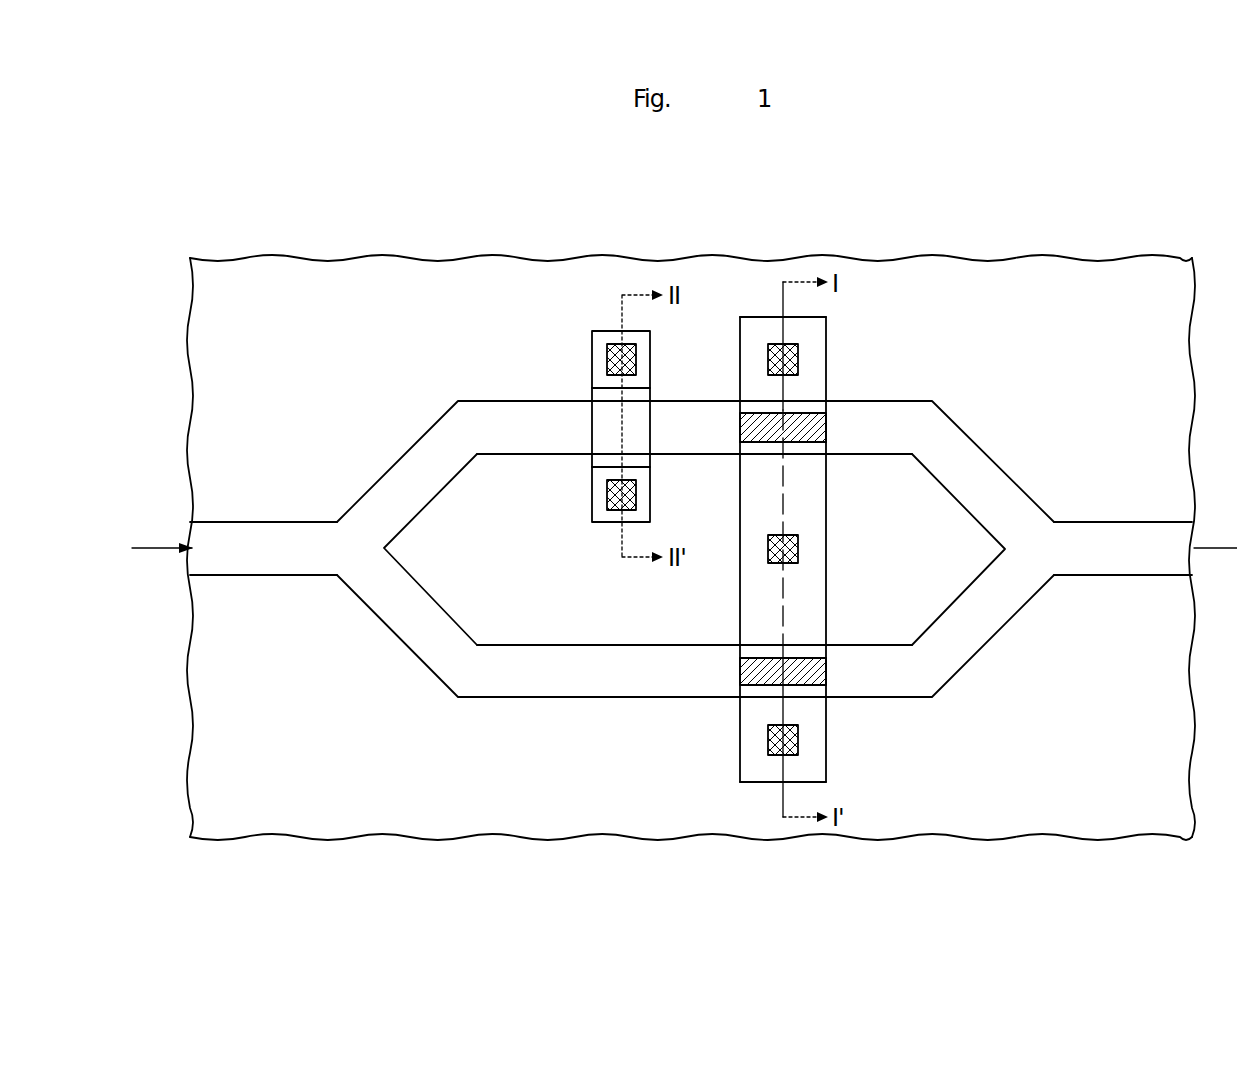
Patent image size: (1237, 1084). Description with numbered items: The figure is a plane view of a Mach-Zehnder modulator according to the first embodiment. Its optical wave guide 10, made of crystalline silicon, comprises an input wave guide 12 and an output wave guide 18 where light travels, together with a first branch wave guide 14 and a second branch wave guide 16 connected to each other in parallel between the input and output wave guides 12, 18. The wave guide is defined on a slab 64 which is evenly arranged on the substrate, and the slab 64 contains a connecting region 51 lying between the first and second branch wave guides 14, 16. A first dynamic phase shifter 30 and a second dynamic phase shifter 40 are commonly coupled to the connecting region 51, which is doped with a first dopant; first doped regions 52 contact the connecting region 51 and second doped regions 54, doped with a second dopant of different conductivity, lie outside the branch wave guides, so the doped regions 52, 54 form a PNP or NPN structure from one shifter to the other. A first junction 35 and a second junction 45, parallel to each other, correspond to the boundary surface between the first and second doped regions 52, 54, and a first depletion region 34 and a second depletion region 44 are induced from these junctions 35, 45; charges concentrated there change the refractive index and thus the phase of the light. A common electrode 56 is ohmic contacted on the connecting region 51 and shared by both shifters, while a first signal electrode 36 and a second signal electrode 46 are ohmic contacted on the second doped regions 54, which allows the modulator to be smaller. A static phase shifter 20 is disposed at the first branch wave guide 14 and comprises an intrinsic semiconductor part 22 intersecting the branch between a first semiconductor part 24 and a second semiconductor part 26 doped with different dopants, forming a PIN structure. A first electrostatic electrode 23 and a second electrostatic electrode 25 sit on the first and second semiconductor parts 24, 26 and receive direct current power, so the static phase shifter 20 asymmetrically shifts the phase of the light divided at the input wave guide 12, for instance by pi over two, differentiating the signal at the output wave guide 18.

The optical wave guide 10 is at (691, 537).
The input wave guide 12 is at (265, 530).
The first branch wave guide 14 is at (381, 481).
The second branch wave guide 16 is at (373, 608).
The output wave guide 18 is at (1055, 417).
The static phase shifter 20 is at (583, 341).
The intrinsic semiconductor part 22 is at (602, 427).
The first electrostatic electrode 23 is at (637, 356).
The first semiconductor part 24 is at (607, 337).
The second electrostatic electrode 25 is at (637, 494).
The second semiconductor part 26 is at (598, 497).
The first dynamic phase shifter 30 is at (852, 301).
The first depletion region 34 is at (808, 425).
The first junction 35 is at (820, 440).
The first signal electrode 36 is at (768, 358).
The second dynamic phase shifter 40 is at (851, 802).
The second depletion region 44 is at (808, 670).
The second junction 45 is at (820, 660).
The second signal electrode 46 is at (768, 740).
The connecting region 51 is at (816, 500).
The first doped region 52 is at (830, 449).
The second doped region 54 is at (760, 330).
The common electrode 56 is at (799, 548).
The slab 64 is at (1110, 268).